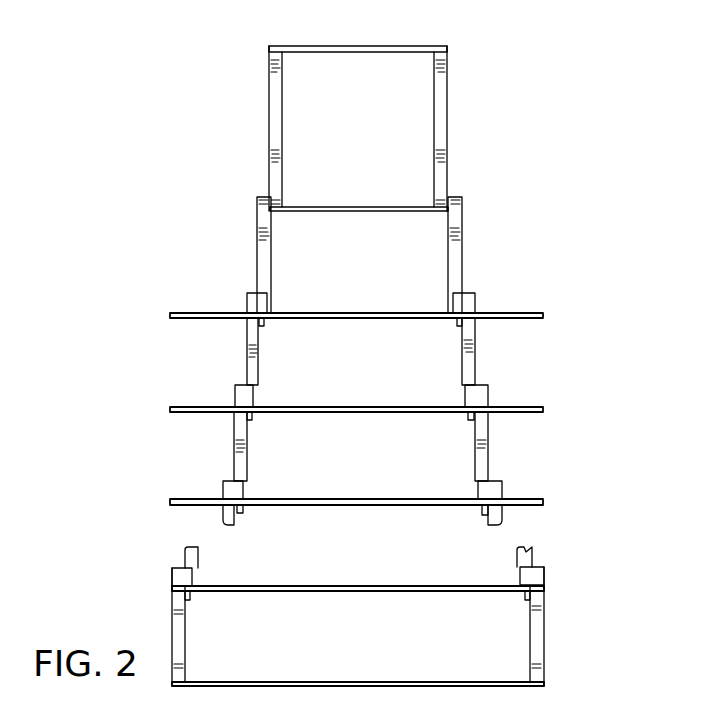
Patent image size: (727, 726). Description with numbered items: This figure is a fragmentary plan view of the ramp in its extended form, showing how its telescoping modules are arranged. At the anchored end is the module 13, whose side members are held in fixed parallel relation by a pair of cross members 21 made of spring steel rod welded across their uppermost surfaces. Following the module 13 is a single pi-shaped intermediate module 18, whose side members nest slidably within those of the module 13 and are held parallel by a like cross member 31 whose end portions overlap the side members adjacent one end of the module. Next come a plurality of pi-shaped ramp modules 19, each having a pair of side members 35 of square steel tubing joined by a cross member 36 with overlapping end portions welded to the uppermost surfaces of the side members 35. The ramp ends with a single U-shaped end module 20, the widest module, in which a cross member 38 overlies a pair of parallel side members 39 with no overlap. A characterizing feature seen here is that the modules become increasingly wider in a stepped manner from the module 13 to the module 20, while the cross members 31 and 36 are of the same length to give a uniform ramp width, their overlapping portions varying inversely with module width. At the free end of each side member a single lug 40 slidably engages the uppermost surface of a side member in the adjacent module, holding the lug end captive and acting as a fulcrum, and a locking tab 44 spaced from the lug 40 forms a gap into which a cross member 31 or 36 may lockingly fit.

The module 13 is at (258, 121).
The cross member 21 is at (423, 46).
The pi-shaped intermediate module 18 is at (457, 272).
The cross member 31 is at (368, 318).
The pi-shaped ramp module 19 is at (477, 343).
The locking tab 44 is at (264, 323).
The lug 40 is at (237, 390).
The cross member 36 is at (375, 412).
The side member 35 is at (240, 462).
The U-shaped end module 20 is at (162, 605).
The side member 39 is at (540, 632).
The cross member 38 is at (372, 682).